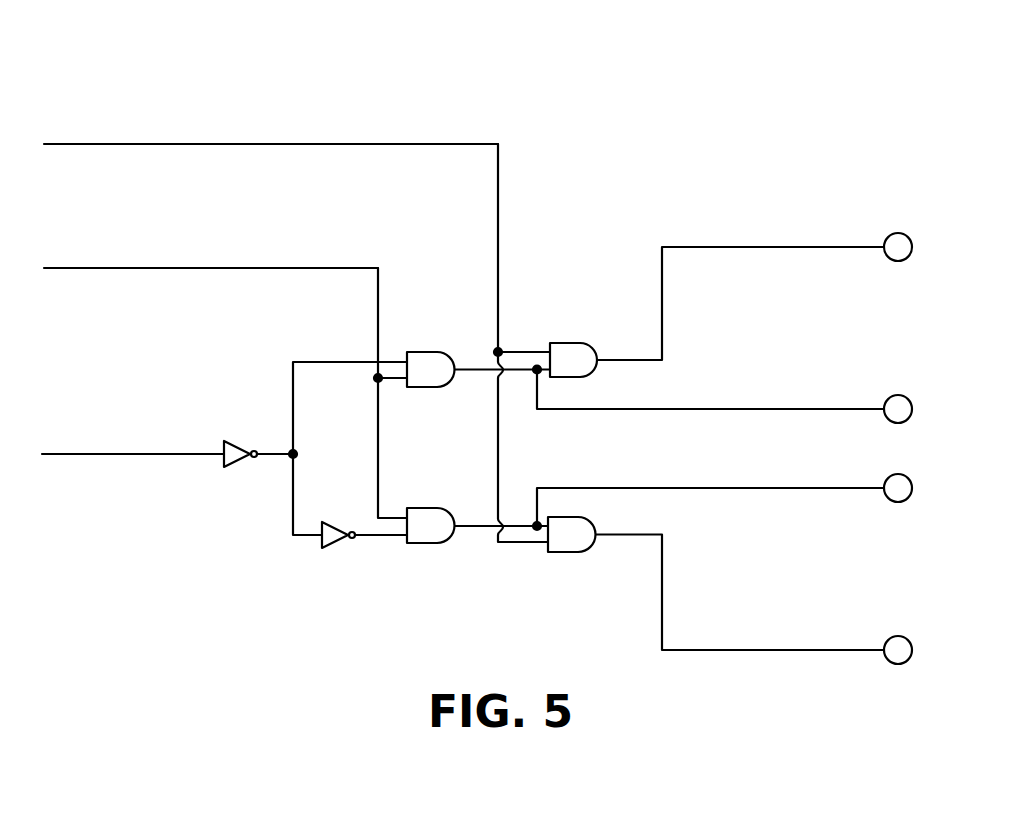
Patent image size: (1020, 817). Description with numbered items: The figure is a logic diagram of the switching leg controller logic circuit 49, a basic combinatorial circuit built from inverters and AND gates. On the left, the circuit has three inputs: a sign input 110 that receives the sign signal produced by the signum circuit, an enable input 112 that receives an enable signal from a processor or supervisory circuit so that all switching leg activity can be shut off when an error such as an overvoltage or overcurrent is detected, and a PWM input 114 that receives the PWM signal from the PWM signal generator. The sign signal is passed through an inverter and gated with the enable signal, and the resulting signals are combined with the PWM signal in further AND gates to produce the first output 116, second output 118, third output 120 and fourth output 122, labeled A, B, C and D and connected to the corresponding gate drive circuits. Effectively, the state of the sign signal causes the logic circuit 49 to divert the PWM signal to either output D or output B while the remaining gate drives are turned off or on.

The logic circuit 49 is at (581, 76).
The sign input 110 is at (117, 454).
The enable input 112 is at (182, 268).
The PWM input 114 is at (182, 144).
The first output 116 is at (724, 409).
The second output 118 is at (724, 650).
The third output 120 is at (724, 488).
The fourth output 122 is at (724, 247).